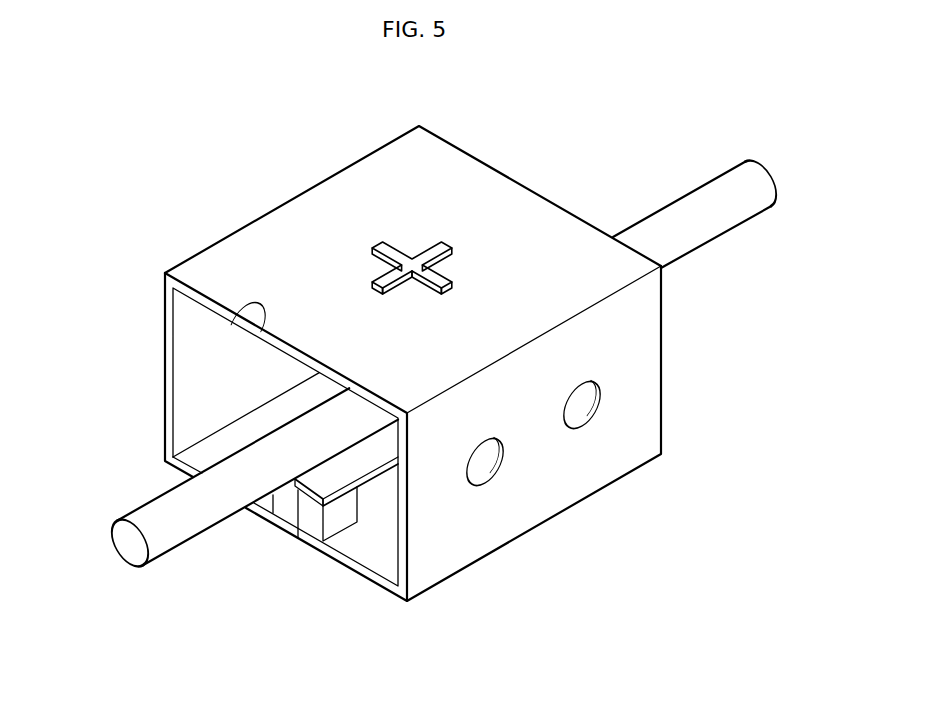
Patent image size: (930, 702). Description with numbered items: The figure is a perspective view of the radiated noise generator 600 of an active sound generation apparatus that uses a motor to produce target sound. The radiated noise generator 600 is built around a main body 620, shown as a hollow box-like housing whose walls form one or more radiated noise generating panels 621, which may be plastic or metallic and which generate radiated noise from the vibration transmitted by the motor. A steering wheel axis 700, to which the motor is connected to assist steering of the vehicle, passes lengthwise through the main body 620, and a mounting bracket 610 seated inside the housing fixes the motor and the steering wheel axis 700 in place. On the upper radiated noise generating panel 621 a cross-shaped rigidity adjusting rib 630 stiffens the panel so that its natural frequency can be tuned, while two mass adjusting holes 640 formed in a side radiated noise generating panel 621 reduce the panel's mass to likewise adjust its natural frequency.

The radiated noise generator 600 is at (167, 242).
The mounting bracket 610 is at (315, 523).
The main body 620 is at (298, 207).
The radiated noise generating panel 621 is at (537, 215).
The rigidity adjusting rib 630 is at (443, 238).
The mass adjusting hole 640 is at (487, 464).
The steering wheel axis 700 is at (157, 513).